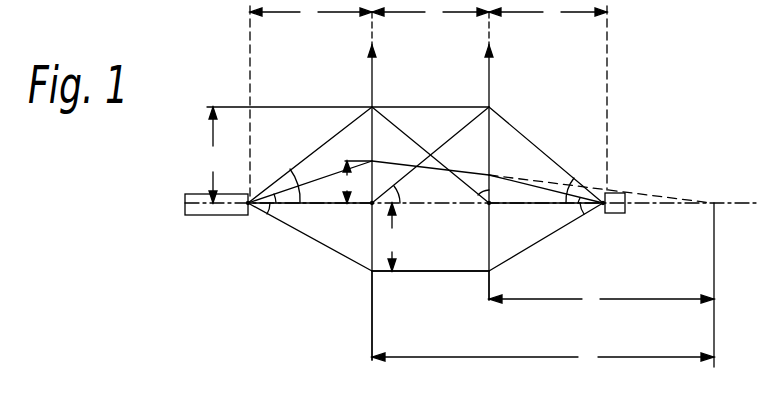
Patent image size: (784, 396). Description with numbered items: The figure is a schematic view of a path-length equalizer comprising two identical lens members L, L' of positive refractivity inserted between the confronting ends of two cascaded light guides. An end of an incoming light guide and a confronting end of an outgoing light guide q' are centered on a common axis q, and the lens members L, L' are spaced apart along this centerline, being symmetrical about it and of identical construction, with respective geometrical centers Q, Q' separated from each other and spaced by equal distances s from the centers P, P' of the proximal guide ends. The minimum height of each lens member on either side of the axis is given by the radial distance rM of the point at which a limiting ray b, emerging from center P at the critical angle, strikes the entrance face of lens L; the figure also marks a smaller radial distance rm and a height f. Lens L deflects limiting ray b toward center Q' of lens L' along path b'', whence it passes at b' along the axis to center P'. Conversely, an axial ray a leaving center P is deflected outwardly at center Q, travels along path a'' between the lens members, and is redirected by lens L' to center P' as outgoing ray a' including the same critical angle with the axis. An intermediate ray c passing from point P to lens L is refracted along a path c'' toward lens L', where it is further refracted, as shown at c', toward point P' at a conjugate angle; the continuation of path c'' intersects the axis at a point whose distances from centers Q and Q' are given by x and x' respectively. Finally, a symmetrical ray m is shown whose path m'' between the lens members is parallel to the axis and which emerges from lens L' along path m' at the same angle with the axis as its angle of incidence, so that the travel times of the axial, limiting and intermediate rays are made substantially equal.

The common axis (centerline) q is at (216, 228).
The outgoing light guide q' is at (630, 218).
The center of proximal end of incoming light guide P is at (239, 187).
The center of proximal end of outgoing light guide P' is at (622, 181).
The axial ray a is at (368, 117).
The outgoing ray a' is at (546, 151).
The path of axial ray between lens members a'' is at (430, 155).
The limiting ray b is at (310, 155).
The path of limiting ray along axis b' is at (546, 220).
The path of limiting ray between lens members b'' is at (430, 155).
The intermediate ray c is at (310, 169).
The refracted path of intermediate ray toward P' c' is at (600, 174).
The path of intermediate ray between lens members c'' is at (430, 158).
The symmetrical ray m is at (310, 237).
The emerging path of symmetrical ray m' is at (546, 237).
The path of symmetrical ray between lens members m'' is at (430, 284).
The geometrical center of first lens member Q is at (352, 219).
The geometrical center of second lens member Q' is at (473, 218).
The first lens member L is at (390, 315).
The second lens member L' is at (470, 285).
The distance between guide end center and lens center s is at (428, 13).
The radial distance of limiting ray strike point rM is at (211, 155).
The minimum aperture radius rm is at (392, 237).
The focal height f is at (357, 182).
The distance from center Q to axis intersection of path c'' x is at (543, 357).
The distance from center Q' to axis intersection of path c'' x' is at (601, 298).